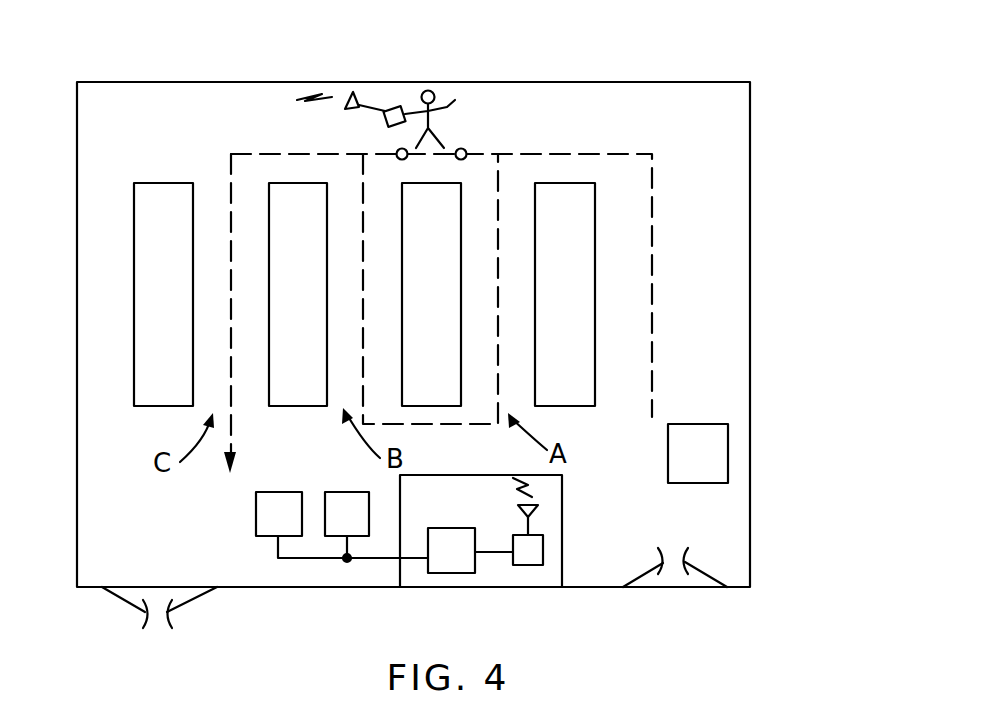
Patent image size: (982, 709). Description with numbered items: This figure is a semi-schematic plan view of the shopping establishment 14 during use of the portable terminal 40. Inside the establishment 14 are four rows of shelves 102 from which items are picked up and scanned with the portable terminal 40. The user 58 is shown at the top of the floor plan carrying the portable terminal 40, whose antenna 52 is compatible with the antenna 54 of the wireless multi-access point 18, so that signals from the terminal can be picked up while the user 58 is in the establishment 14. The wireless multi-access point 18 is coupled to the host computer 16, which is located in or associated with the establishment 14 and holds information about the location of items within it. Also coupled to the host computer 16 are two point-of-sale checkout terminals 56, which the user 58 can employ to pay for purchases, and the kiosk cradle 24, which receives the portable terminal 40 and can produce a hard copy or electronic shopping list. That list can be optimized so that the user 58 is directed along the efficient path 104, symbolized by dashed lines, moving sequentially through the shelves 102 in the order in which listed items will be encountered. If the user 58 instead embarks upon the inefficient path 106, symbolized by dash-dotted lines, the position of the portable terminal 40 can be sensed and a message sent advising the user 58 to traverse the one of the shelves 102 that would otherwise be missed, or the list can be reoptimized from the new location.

The shopping establishment 14 is at (751, 275).
The host computer 16 is at (456, 562).
The wireless multi-access point 18 is at (528, 558).
The shopping establishment kiosk cradle 24 is at (728, 452).
The portable terminal 40 is at (398, 107).
The antenna 52 is at (357, 100).
The antenna 54 is at (538, 510).
The point-of-sale checkout terminal 56 is at (285, 527).
The user 58 is at (462, 99).
The shelves 102 is at (588, 309).
The efficient path 104 is at (652, 229).
The inefficient path 106 is at (487, 153).